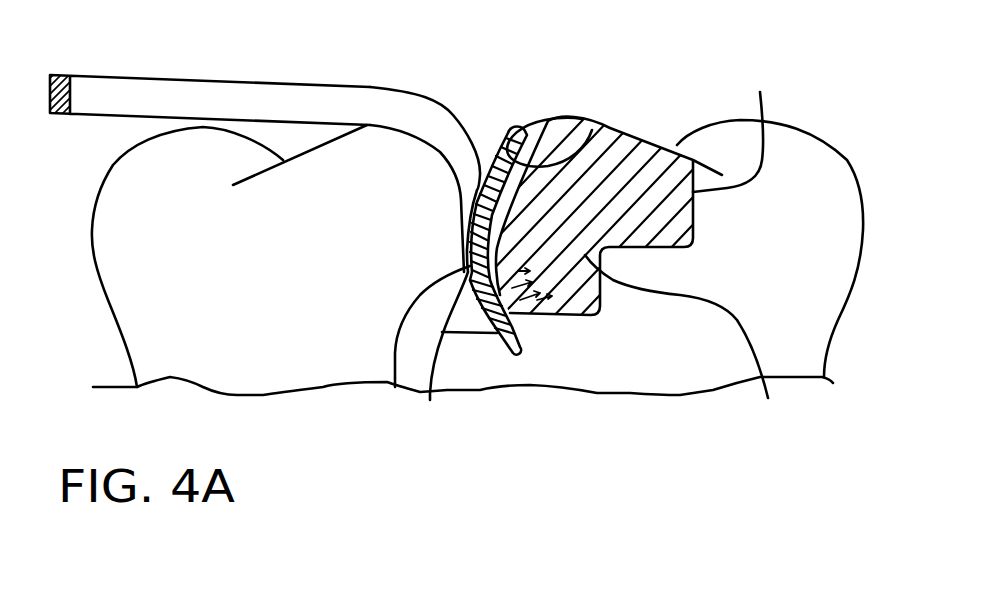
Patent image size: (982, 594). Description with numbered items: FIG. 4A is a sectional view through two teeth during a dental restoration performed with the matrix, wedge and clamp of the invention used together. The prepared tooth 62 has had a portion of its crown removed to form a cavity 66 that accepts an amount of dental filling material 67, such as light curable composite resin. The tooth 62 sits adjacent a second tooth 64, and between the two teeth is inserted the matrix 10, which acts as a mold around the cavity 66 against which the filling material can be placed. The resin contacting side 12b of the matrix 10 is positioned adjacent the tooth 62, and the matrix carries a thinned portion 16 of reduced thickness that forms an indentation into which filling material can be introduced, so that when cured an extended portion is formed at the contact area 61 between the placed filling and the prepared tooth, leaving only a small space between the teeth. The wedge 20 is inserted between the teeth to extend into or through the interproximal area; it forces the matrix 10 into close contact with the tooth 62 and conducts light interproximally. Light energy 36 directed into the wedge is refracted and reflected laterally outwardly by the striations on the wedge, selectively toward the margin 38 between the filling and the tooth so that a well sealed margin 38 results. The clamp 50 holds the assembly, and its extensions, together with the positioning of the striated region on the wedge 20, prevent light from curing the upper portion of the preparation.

The clamp 50 is at (257, 97).
The thinned portion 16 is at (477, 190).
The matrix 10 is at (493, 135).
The resin contacting side 12b is at (592, 130).
The cavity 66 is at (735, 125).
The tooth 62 is at (813, 157).
The second tooth 64 is at (122, 275).
The contact area 61 is at (395, 387).
The wedge 20 is at (468, 322).
The light energy 36 is at (523, 310).
The margin 38 is at (573, 315).
The dental filling material 67 is at (768, 398).